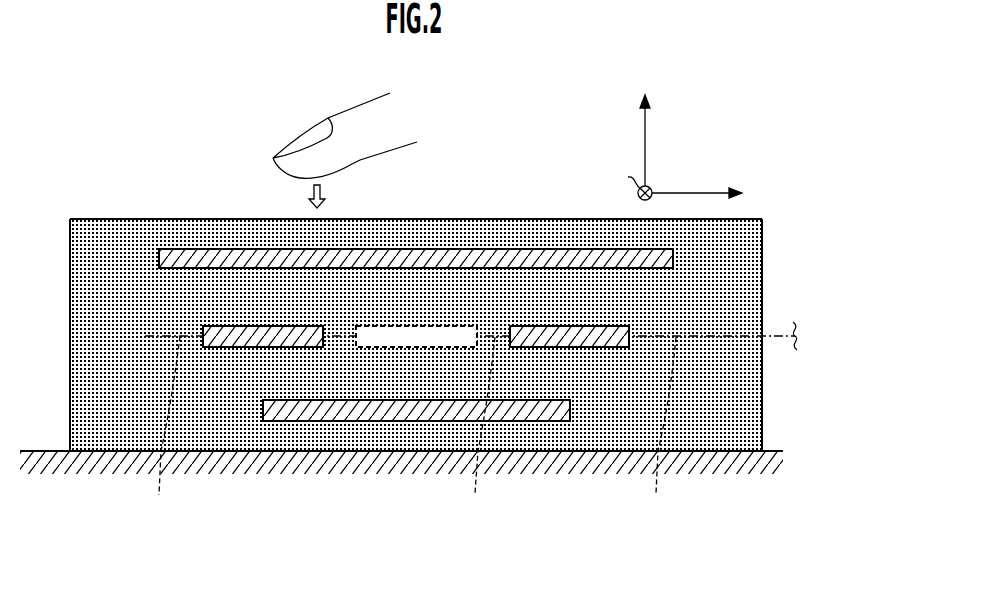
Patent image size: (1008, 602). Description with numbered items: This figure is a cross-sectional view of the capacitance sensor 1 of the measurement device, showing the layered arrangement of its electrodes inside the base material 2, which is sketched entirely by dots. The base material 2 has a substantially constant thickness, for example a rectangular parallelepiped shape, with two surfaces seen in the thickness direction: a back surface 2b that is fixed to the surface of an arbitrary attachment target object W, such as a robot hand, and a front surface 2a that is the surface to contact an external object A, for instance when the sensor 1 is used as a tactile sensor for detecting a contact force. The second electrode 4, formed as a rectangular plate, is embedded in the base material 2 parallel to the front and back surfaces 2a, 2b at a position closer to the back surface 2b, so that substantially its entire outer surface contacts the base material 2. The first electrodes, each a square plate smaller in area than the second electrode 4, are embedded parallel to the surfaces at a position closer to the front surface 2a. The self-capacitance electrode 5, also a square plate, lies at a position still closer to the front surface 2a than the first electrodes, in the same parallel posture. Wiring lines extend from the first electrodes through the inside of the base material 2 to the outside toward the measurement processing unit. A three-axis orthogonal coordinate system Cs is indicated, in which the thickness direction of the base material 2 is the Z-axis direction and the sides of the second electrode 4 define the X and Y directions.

The capacitance sensor 1 is at (433, 318).
The base material 2 is at (416, 335).
The front surface 2a is at (361, 219).
The back surface 2b is at (303, 453).
The second electrode 4 is at (432, 413).
The self-capacitance electrode 5 is at (507, 249).
The external object A is at (325, 108).
The attachment target object W is at (49, 450).
The coordinate system Cs is at (677, 145).